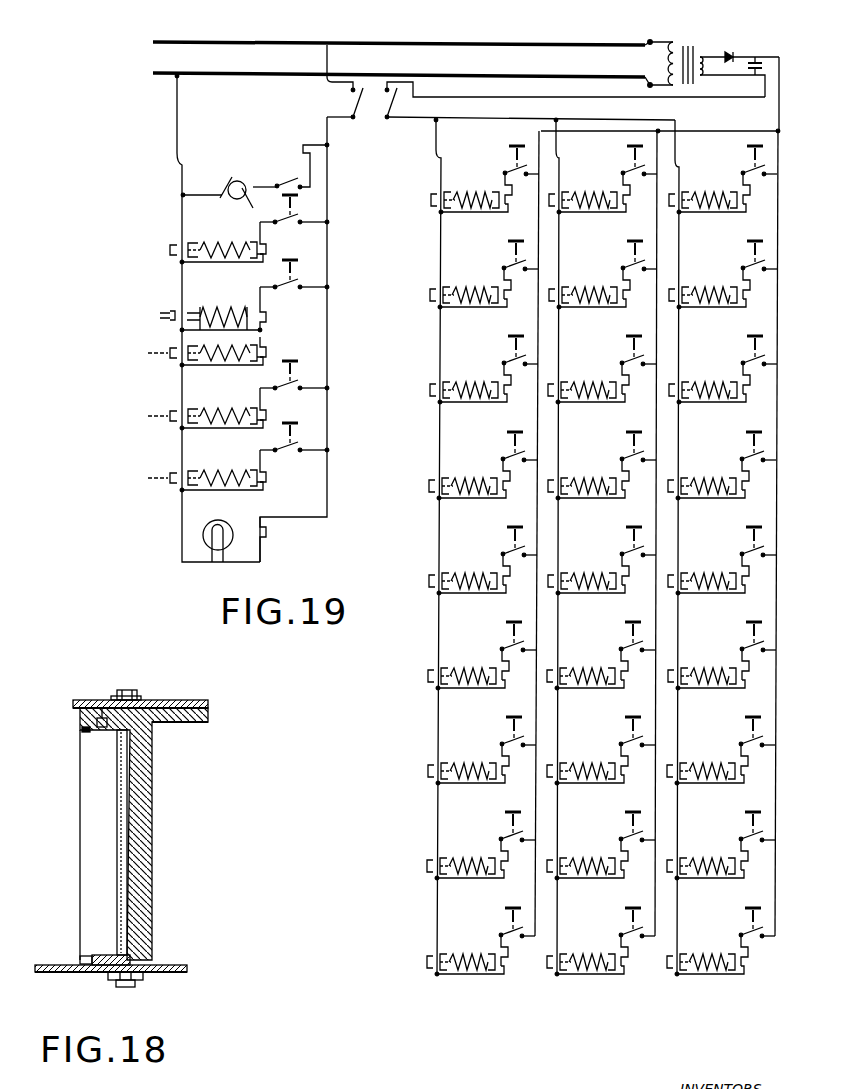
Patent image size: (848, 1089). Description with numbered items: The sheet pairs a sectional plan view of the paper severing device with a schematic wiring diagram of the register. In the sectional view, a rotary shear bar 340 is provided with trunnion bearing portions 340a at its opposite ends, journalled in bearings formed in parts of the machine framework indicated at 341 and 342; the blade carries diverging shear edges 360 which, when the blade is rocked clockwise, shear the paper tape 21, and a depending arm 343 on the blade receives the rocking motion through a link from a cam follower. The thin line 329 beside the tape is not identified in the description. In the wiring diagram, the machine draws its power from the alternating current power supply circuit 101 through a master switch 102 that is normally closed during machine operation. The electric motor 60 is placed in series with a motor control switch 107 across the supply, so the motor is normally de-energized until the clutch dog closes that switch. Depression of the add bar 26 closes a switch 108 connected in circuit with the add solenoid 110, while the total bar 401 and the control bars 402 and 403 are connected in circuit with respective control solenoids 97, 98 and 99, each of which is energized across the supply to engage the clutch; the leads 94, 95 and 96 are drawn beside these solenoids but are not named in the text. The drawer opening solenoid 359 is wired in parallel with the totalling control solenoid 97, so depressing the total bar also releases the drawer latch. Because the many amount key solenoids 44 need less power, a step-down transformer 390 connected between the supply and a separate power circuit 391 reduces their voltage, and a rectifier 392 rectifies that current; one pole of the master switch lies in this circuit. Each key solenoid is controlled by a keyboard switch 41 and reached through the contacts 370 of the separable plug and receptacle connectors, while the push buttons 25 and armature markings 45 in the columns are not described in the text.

In FIG. 19, the power supply circuit 101 is at (248, 70).
In FIG. 19, the master switch 102 is at (358, 104).
In FIG. 19, the electric motor 60 is at (243, 178).
In FIG. 19, the motor control switch 107 is at (301, 180).
In FIG. 19, the add bar 26 is at (292, 198).
In FIG. 19, the switch 108 is at (294, 229).
In FIG. 19, the add solenoid 110 is at (232, 238).
In FIG. 19, the total bar 401 is at (288, 246).
In FIG. 19, the control bar 402 is at (288, 340).
In FIG. 19, the control bar 403 is at (312, 404).
In FIG. 19, the drawer opening solenoid 359 is at (243, 307).
In FIG. 19, the relay lead 94 is at (145, 354).
In FIG. 19, the relay lead 95 is at (145, 416).
In FIG. 19, the relay lead 96 is at (145, 478).
In FIG. 19, the totalling control solenoid 97 is at (216, 366).
In FIG. 19, the control solenoid 98 is at (216, 430).
In FIG. 19, the control solenoid 99 is at (216, 492).
In FIG. 19, the rectifier 392 is at (204, 538).
In FIG. 19, the step-down transformer 390 is at (706, 36).
In FIG. 19, the power circuit 391 is at (764, 86).
In FIG. 19, the push button 25 is at (516, 144).
In FIG. 19, the switches 41 is at (504, 362).
In FIG. 19, the key solenoids 44 is at (703, 190).
In FIG. 19, the relay armature 45 is at (432, 390).
In FIG. 19, the contacts 370 is at (514, 197).
In FIG. 18, the trunnion bearing portions 340a is at (130, 690).
In FIG. 18, the machine framework 341 is at (150, 700).
In FIG. 18, the depending arm 343 is at (185, 721).
In FIG. 18, the rotary shear bar 340 is at (148, 836).
In FIG. 18, the diverging shear edges 360 is at (133, 797).
In FIG. 18, the cover line 329 is at (117, 845).
In FIG. 18, the paper tape 21 is at (120, 878).
In FIG. 18, the machine framework 342 is at (162, 977).